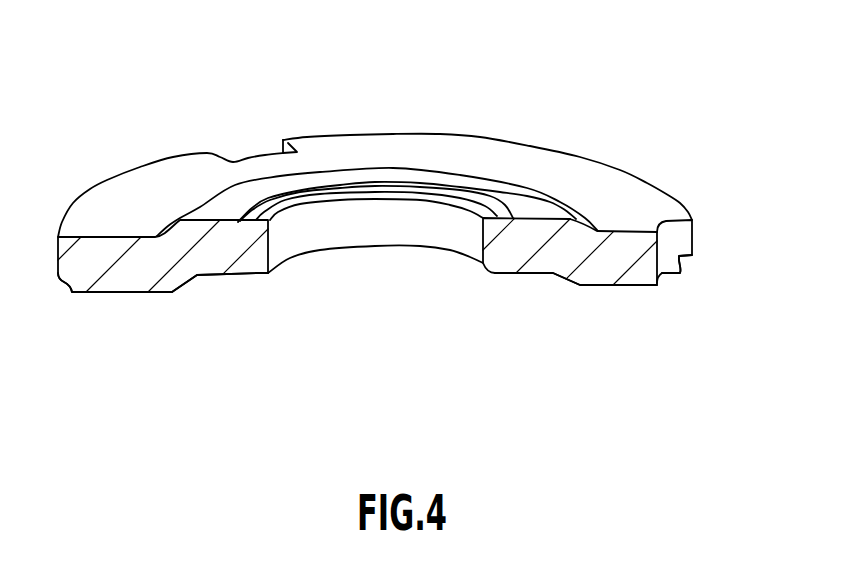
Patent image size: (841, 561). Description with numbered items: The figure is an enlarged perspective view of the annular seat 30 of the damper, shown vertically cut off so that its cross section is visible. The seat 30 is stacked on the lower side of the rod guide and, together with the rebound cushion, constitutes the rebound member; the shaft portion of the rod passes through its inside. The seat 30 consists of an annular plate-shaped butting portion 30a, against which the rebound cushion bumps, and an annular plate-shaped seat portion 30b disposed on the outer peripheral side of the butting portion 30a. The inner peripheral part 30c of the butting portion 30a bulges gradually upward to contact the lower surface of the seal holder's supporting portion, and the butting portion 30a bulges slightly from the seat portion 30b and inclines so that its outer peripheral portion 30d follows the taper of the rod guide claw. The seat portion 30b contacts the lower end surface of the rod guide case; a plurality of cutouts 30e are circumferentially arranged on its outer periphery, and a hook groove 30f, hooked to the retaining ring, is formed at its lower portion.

The seat 30 is at (597, 135).
The butting portion 30a is at (235, 275).
The seat portion 30b is at (114, 293).
The inner peripheral part 30c is at (263, 213).
The outer peripheral portion 30d is at (572, 273).
The cutouts 30e is at (248, 158).
The hook groove 30f is at (690, 266).